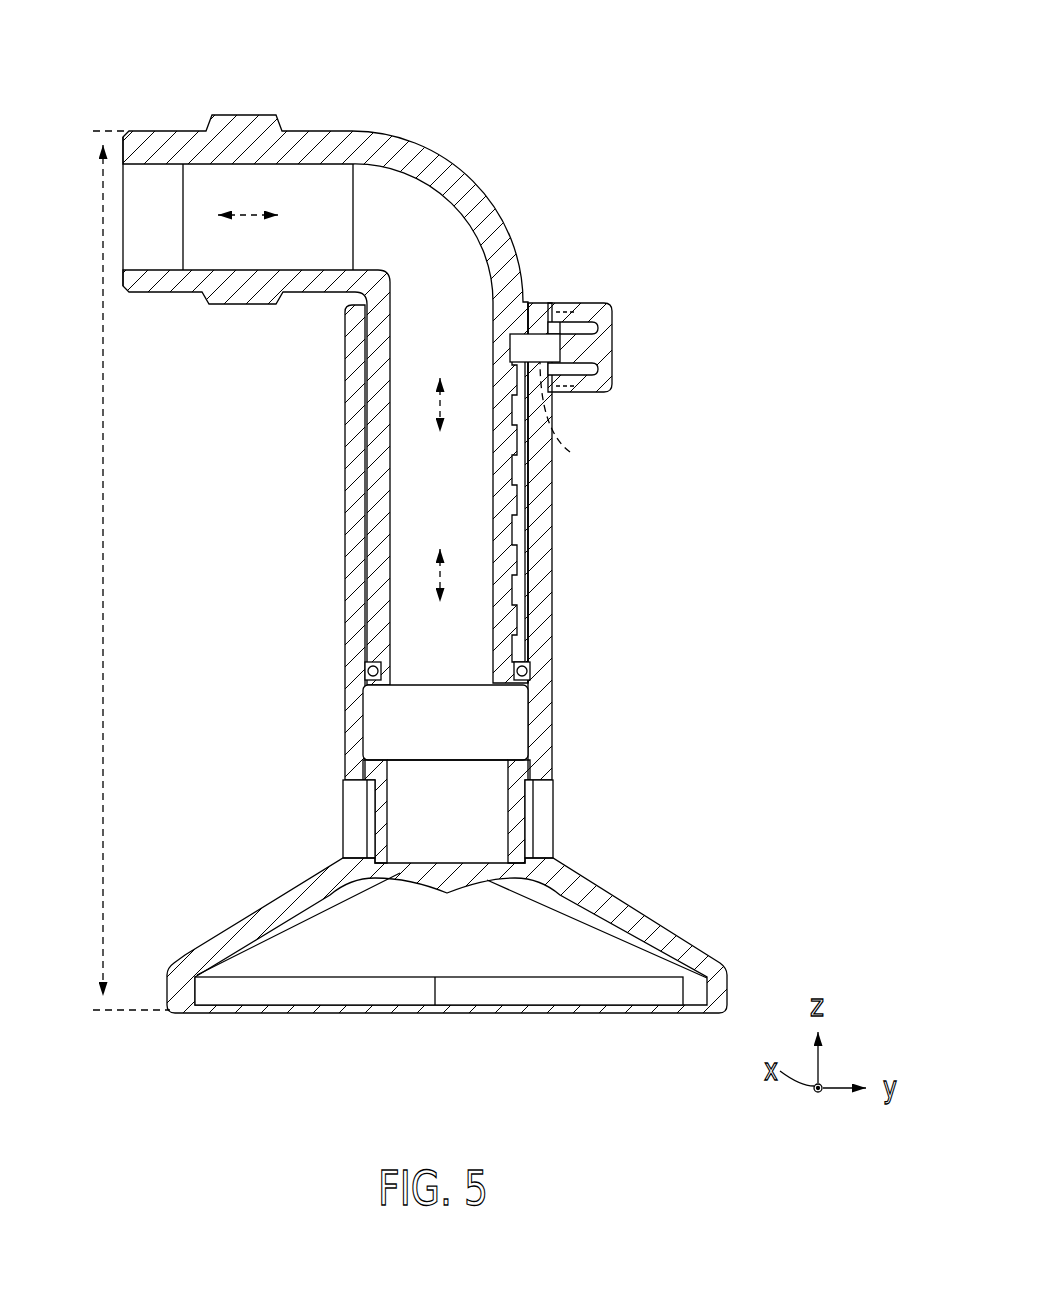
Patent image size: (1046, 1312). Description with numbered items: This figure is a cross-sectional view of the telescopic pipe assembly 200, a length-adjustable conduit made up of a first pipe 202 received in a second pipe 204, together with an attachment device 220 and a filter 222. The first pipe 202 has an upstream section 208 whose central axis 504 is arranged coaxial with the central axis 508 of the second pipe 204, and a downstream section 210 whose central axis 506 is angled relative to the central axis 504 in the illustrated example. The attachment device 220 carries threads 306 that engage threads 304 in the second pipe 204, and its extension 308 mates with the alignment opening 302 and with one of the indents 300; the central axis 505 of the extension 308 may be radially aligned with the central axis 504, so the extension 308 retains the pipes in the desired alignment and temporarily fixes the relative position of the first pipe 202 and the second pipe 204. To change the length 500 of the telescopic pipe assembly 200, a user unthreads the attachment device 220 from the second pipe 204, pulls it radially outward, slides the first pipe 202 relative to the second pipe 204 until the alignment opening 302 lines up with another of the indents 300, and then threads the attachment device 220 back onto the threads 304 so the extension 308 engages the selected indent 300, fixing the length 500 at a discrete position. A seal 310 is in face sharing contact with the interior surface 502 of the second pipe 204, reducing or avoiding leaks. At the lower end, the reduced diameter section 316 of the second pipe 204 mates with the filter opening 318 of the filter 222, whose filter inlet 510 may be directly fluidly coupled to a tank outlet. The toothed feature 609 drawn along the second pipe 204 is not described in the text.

The telescopic pipe assembly 200 is at (768, 95).
The first pipe 202 is at (570, 150).
The second pipe 204 is at (636, 523).
The upstream section 208 is at (357, 422).
The downstream section 210 is at (218, 315).
The attachment device 220 is at (644, 373).
The filter 222 is at (238, 898).
The indents 300 is at (550, 366).
The alignment opening 302 is at (606, 333).
The threads 304 is at (578, 322).
The threads 306 is at (561, 323).
The extension 308 is at (529, 337).
The seal 310 is at (528, 673).
The reduced diameter section 316 is at (348, 822).
The filter opening 318 is at (440, 880).
The length 500 is at (100, 578).
The interior surface 502 is at (533, 656).
The central axis 504 is at (512, 348).
The central axis 505 is at (571, 415).
The central axis 506 is at (265, 218).
The central axis 508 is at (441, 575).
The filter inlet 510 is at (457, 1012).
The rack 609 is at (527, 585).